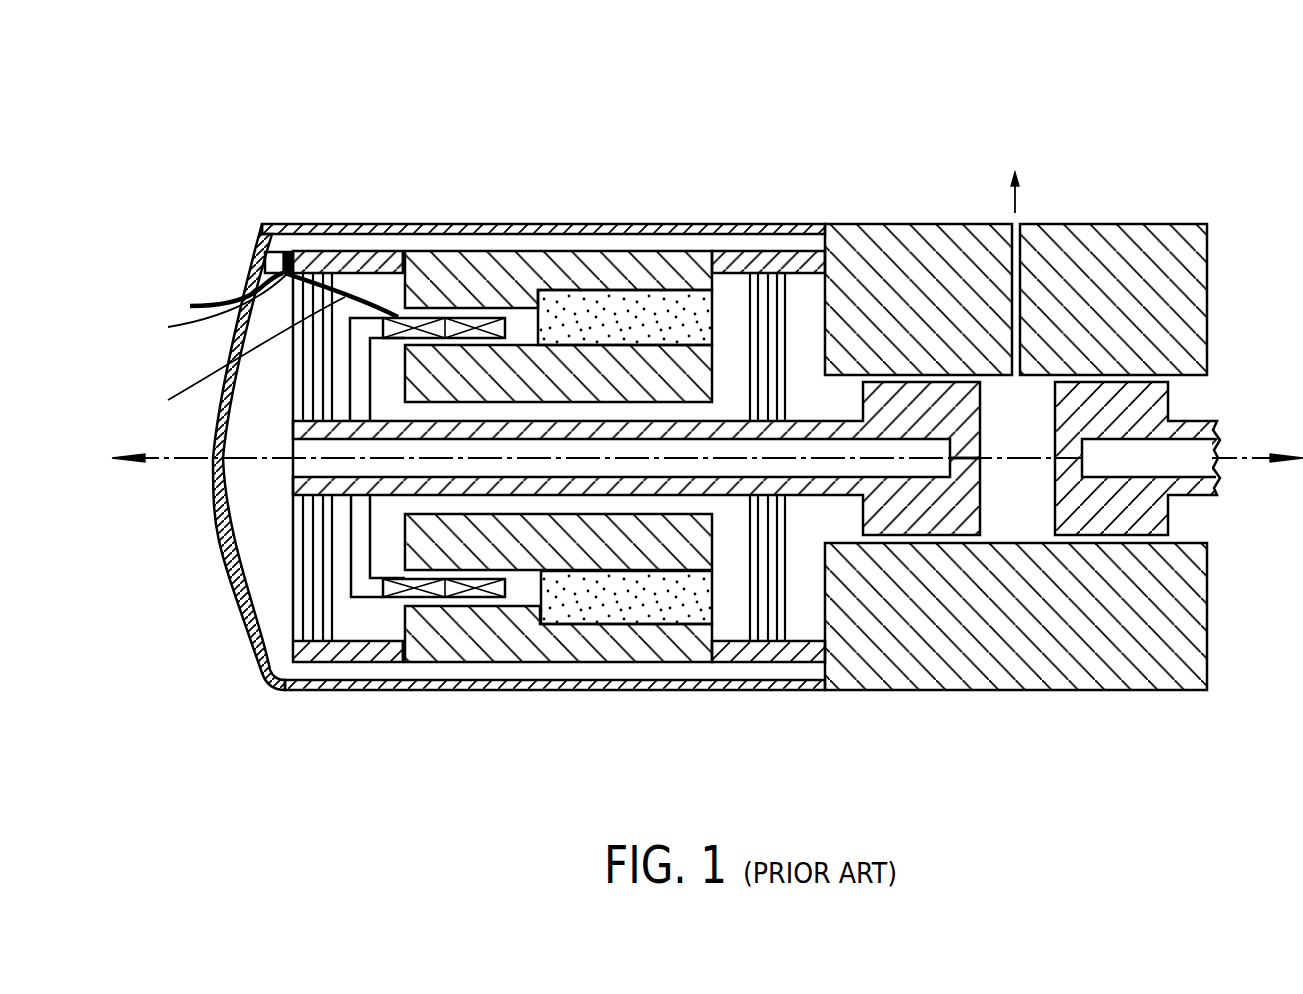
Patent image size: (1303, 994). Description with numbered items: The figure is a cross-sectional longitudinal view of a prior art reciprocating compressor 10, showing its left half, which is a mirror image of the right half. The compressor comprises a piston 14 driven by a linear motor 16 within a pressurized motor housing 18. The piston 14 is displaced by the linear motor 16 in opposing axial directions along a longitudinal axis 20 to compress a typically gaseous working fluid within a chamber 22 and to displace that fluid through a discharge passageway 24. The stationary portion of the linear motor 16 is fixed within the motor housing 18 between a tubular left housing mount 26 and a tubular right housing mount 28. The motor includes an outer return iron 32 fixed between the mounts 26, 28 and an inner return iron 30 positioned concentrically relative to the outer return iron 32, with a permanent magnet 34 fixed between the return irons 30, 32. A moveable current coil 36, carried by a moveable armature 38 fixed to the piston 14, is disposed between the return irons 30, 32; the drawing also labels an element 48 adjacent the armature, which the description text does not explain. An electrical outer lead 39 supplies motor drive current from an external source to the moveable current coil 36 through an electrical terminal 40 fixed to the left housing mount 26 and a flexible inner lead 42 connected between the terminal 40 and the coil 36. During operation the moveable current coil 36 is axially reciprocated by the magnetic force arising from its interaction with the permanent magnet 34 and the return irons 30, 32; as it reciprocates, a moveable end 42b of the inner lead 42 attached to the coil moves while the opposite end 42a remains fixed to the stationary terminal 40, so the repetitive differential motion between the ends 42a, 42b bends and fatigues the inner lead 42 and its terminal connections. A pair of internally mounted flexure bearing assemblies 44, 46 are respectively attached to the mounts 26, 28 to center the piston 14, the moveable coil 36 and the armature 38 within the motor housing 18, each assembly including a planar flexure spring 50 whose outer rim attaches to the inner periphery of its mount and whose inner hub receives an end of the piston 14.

The reciprocating compressor 10 is at (790, 120).
The piston 14 is at (932, 517).
The linear motor 16 is at (360, 620).
The motor housing 18 is at (477, 224).
The longitudinal axis 20 is at (172, 462).
The chamber 22 is at (1008, 400).
The discharge passageway 24 is at (1015, 262).
The left housing mount 26 is at (337, 262).
The right housing mount 28 is at (740, 262).
The inner return iron 30 is at (443, 557).
The outer return iron 32 is at (475, 632).
The permanent magnet 34 is at (617, 310).
The moveable current coil 36 is at (463, 318).
The moveable armature 38 is at (352, 563).
The electrical outer lead 39 is at (208, 302).
The electrical terminal 40 is at (270, 253).
The inner lead 42 is at (338, 299).
The fixed end of inner lead 42a is at (203, 306).
The moveable end of inner lead 42b is at (232, 355).
The flexure bearing assembly 44 is at (283, 557).
The flexure bearing assembly 46 is at (738, 600).
The bobbin flange 48 is at (570, 503).
The flexure spring 50 is at (305, 528).